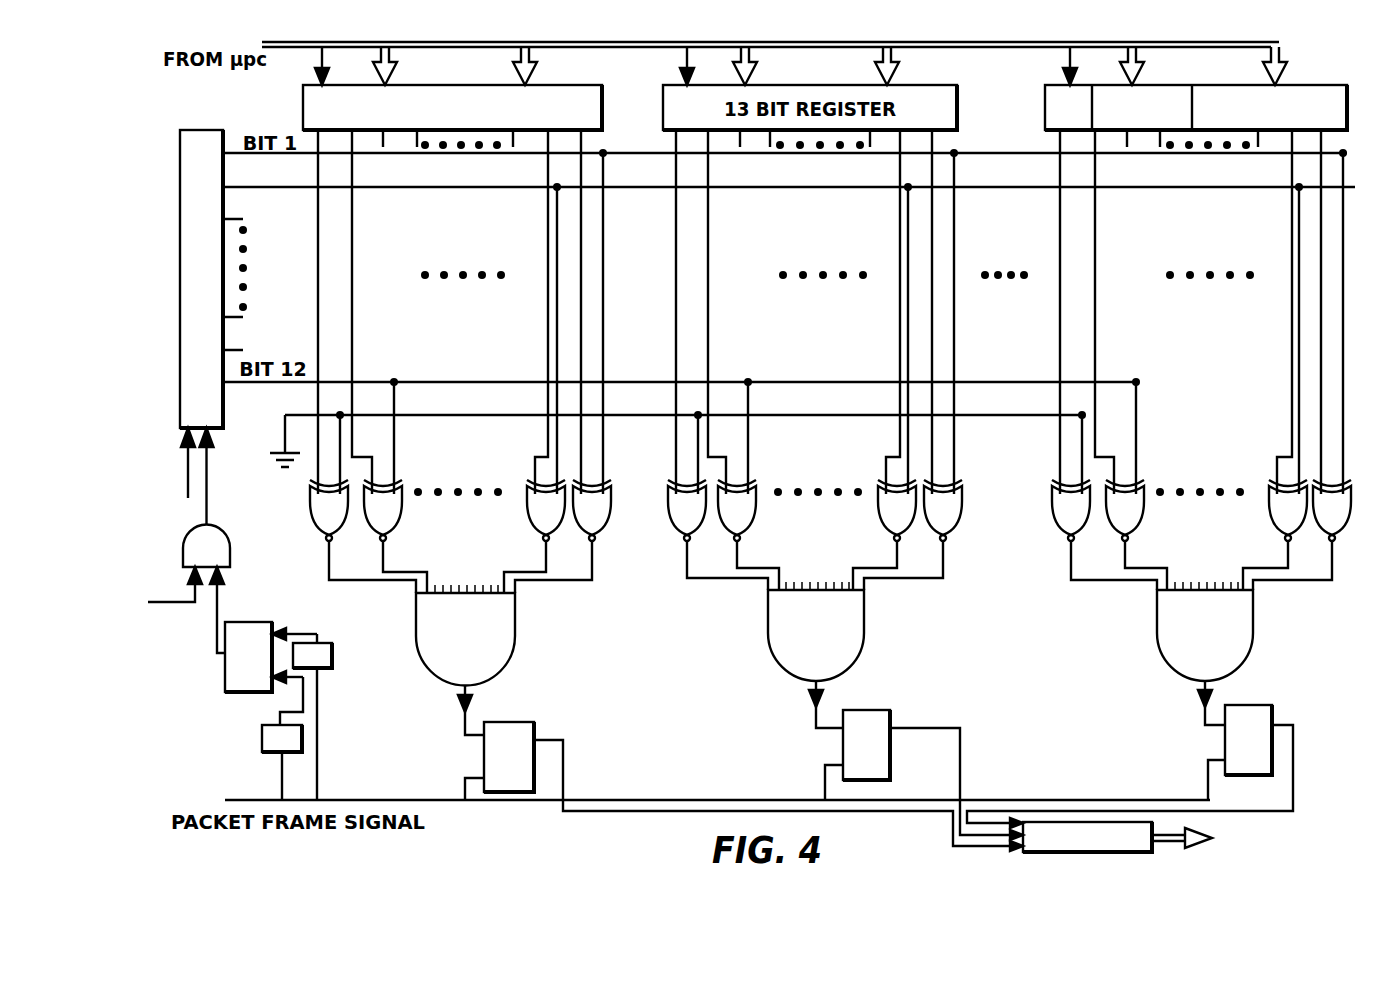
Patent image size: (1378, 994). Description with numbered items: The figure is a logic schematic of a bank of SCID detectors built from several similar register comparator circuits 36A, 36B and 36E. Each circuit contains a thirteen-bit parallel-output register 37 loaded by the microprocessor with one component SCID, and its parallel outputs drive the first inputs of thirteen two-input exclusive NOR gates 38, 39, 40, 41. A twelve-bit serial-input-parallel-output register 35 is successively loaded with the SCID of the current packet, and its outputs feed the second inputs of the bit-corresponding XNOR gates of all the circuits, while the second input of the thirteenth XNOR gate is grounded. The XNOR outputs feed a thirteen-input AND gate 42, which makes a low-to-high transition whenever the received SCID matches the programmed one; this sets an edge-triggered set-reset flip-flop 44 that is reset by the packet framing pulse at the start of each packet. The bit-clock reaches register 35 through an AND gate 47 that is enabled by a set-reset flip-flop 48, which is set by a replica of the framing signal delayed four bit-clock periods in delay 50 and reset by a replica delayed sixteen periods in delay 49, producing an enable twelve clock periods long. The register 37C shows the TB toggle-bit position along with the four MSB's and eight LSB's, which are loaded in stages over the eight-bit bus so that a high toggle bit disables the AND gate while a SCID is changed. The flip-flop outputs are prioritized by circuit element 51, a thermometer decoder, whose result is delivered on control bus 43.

The 12-bit serial-input-parallel-output register 35 is at (222, 428).
The register comparator circuit 36A is at (462, 212).
The register comparator circuit 36B is at (827, 212).
The register comparator circuit 36E is at (1209, 212).
The 13-bit parallel-output register 37 is at (482, 84).
The 13-bit parallel-output register 37C is at (1225, 85).
The exclusive NOR circuit 38 is at (316, 530).
The exclusive NOR circuit 39 is at (377, 530).
The exclusive NOR circuit 40 is at (539, 530).
The exclusive NOR circuit 41 is at (586, 530).
The 13-input AND gate 42 is at (516, 631).
The control bus 43 is at (1242, 832).
The set-reset flip-flop 44 is at (535, 728).
The AND gate 47 is at (183, 560).
The set-reset flip-flop 48 is at (225, 668).
The sixteen bit-clock delay 49 is at (260, 733).
The four bit-clock delay 50 is at (338, 653).
The prioritization circuit element 51 is at (1152, 838).